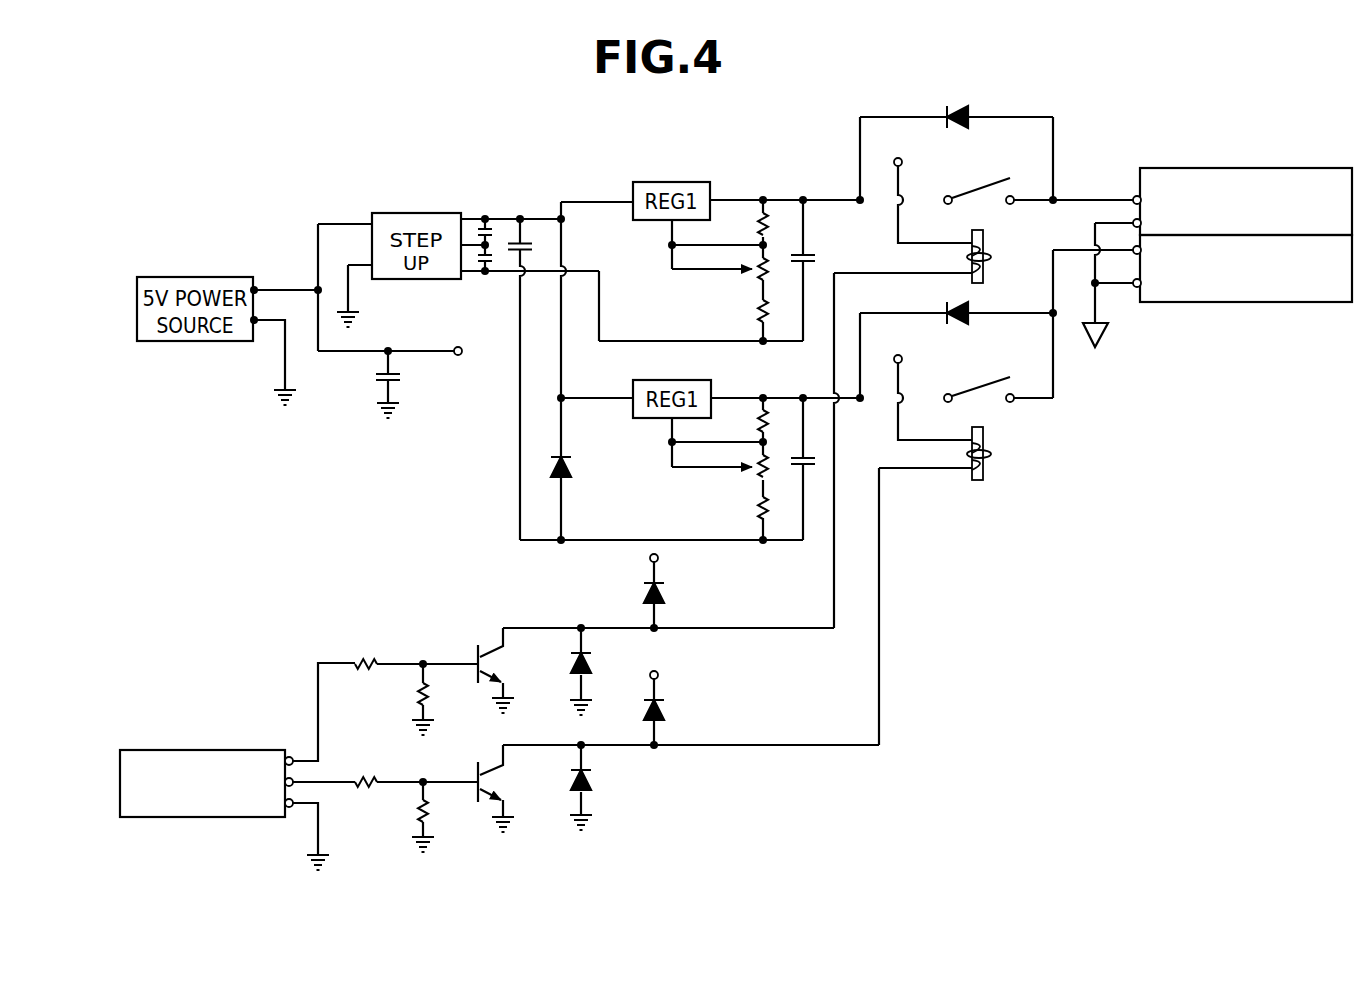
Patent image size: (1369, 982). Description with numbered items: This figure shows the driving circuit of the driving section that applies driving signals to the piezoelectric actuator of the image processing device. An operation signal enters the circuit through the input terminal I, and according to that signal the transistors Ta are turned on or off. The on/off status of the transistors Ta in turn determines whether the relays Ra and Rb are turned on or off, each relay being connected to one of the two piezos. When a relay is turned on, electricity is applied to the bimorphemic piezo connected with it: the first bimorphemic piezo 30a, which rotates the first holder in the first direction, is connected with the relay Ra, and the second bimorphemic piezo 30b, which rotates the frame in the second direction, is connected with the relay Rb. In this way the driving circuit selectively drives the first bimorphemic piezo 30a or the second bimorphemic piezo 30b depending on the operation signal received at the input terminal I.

The relay Ra is at (986, 182).
The relay Rb is at (985, 405).
The first bimorphemic piezo 30a is at (1249, 168).
The second bimorphemic piezo 30b is at (1250, 302).
The transistor Ta is at (473, 661).
The input terminal I is at (218, 749).